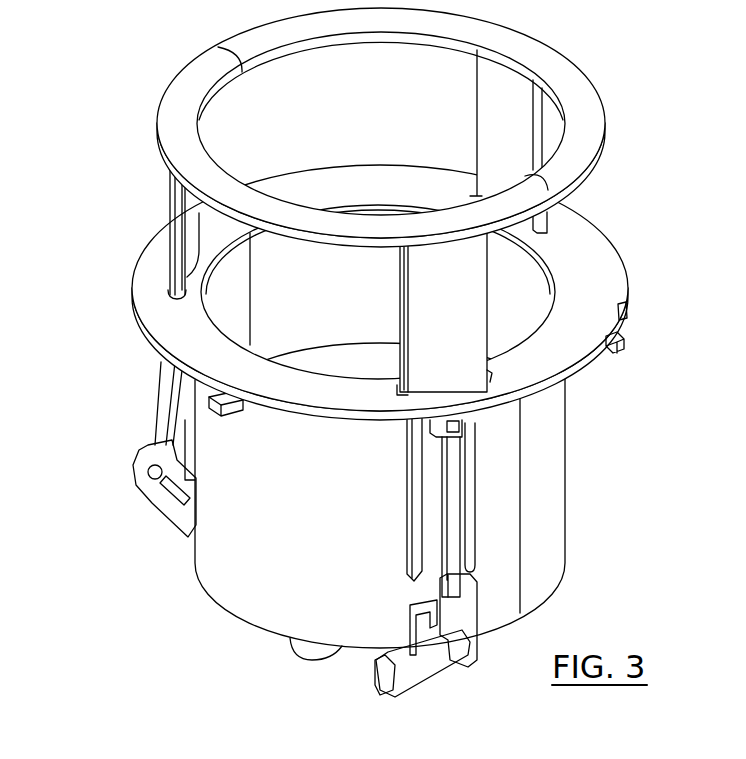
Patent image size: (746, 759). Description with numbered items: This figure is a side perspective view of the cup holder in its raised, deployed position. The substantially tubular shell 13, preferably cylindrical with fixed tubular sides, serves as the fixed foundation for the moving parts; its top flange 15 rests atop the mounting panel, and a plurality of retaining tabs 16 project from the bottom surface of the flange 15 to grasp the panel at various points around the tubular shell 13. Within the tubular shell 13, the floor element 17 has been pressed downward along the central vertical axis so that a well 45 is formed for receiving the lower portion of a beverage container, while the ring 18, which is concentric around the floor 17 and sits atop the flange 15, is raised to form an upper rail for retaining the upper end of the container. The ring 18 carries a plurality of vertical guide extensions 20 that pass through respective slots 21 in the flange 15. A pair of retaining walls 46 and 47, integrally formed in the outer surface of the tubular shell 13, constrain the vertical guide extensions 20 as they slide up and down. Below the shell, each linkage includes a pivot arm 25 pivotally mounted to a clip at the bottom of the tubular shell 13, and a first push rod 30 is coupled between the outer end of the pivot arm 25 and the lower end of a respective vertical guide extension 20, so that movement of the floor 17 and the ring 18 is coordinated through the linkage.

The tubular shell 13 is at (550, 457).
The top flange 15 is at (152, 317).
The retaining tab 16 is at (232, 418).
The floor element 17 is at (347, 355).
The ring 18 is at (574, 80).
The vertical guide extension 20 is at (483, 97).
The slot 21 is at (168, 278).
The pivot arm 25 is at (433, 660).
The first push rod 30 is at (453, 525).
The well 45 is at (526, 279).
The retaining wall 46 is at (407, 490).
The retaining wall 47 is at (477, 495).